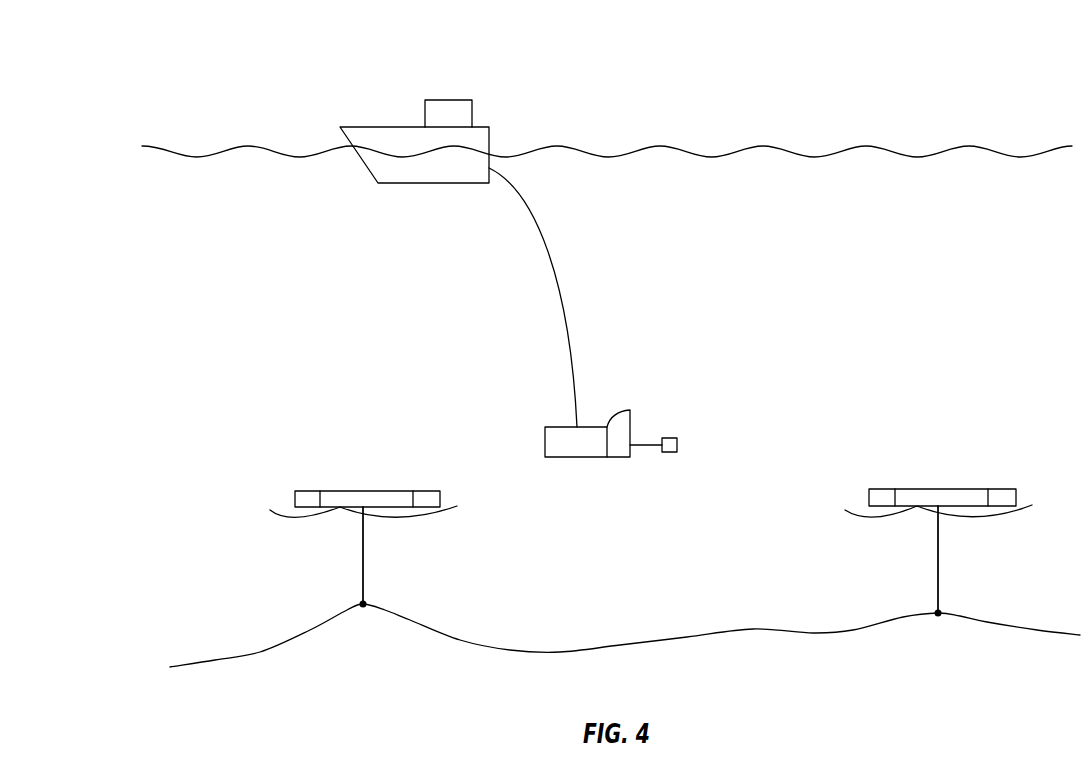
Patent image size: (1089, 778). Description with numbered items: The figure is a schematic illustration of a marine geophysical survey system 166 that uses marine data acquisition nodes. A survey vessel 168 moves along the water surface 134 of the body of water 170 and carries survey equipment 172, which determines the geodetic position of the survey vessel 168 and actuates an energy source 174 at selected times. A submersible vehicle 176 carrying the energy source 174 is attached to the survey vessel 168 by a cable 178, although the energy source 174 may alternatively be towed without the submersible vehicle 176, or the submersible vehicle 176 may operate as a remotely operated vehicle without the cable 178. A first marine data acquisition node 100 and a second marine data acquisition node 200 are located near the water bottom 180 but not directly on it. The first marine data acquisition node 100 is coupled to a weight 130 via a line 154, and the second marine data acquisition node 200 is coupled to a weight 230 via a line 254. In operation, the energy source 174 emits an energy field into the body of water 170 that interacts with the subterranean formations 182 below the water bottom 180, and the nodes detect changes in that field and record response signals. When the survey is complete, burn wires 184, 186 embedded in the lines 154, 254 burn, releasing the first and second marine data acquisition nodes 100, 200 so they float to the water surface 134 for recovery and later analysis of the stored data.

The marine geophysical survey system 166 is at (606, 62).
The survey vessel 168 is at (384, 127).
The survey equipment 172 is at (472, 113).
The water surface 134 is at (864, 146).
The body of water 170 is at (866, 280).
The cable 178 is at (558, 287).
The submersible vehicle 176 is at (560, 425).
The energy source 174 is at (668, 433).
The first marine data acquisition node 100 is at (336, 461).
The line 154 is at (362, 557).
The burn wire 184 is at (363, 583).
The weight 130 is at (363, 604).
The water bottom 180 is at (753, 628).
The subterranean formations 182 is at (852, 701).
The second marine data acquisition node 200 is at (968, 452).
The line 254 is at (938, 550).
The burn wire 186 is at (938, 595).
The weight 230 is at (938, 613).